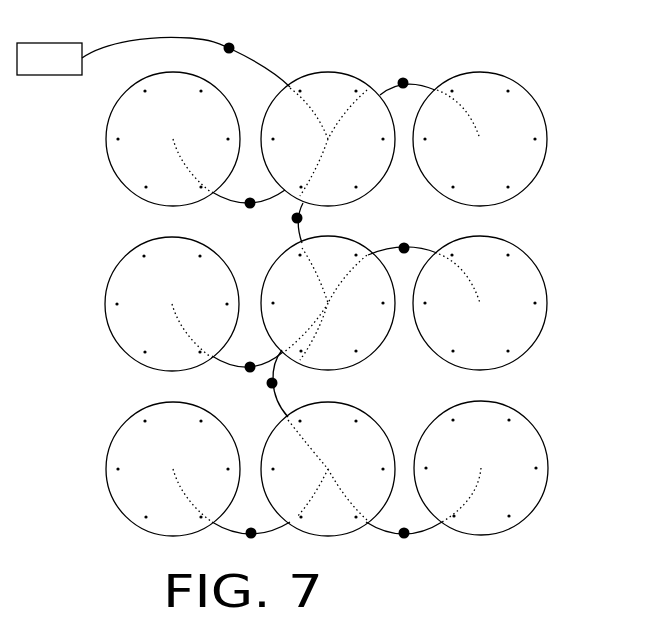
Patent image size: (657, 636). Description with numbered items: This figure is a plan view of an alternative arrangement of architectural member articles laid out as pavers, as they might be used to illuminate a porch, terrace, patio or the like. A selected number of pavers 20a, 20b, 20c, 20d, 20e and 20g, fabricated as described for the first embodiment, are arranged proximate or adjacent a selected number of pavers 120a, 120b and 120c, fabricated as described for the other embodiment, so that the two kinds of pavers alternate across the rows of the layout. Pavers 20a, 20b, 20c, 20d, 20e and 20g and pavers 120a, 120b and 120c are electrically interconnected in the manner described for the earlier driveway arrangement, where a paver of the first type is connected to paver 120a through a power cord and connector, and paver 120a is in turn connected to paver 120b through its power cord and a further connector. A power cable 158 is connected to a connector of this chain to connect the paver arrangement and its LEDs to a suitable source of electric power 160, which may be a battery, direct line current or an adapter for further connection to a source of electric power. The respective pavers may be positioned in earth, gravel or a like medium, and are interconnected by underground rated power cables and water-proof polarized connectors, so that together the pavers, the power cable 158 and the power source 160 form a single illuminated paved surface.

The source of electric power 160 is at (53, 78).
The power cable 158 is at (117, 49).
The paver 20a is at (521, 111).
The paver 20b is at (478, 249).
The paver 20c is at (537, 488).
The paver 20d is at (116, 450).
The paver 20e is at (126, 315).
The tile 20g is at (125, 168).
The paver 120a is at (368, 442).
The paver 120b is at (335, 345).
The paver 120c is at (335, 192).